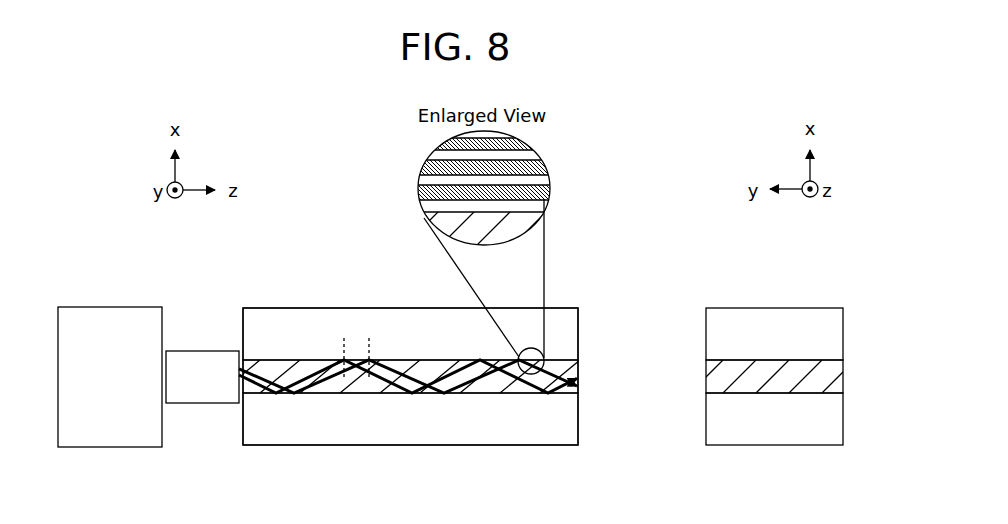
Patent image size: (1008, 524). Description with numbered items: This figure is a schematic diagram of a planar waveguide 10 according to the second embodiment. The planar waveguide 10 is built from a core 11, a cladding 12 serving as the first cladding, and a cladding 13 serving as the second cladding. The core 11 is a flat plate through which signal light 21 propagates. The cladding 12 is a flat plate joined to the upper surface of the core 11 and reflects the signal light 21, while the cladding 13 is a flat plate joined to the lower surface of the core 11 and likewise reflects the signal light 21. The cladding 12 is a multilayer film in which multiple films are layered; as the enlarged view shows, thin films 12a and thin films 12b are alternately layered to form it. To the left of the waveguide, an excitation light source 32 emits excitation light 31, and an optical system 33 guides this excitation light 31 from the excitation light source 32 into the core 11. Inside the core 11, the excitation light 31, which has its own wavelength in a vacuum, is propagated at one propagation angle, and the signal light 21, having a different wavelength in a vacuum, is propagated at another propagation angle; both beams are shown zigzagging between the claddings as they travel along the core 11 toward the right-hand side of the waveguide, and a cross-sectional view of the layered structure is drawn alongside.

The planar waveguide 10 is at (308, 307).
The core 11 is at (568, 372).
The cladding 12 is at (720, 333).
The thin films 12a is at (540, 148).
The thin films 12b is at (462, 136).
The cladding 13 is at (717, 417).
The signal light 21 is at (253, 397).
The excitation light 31 is at (267, 368).
The excitation light source 32 is at (107, 306).
The optical system 33 is at (208, 350).